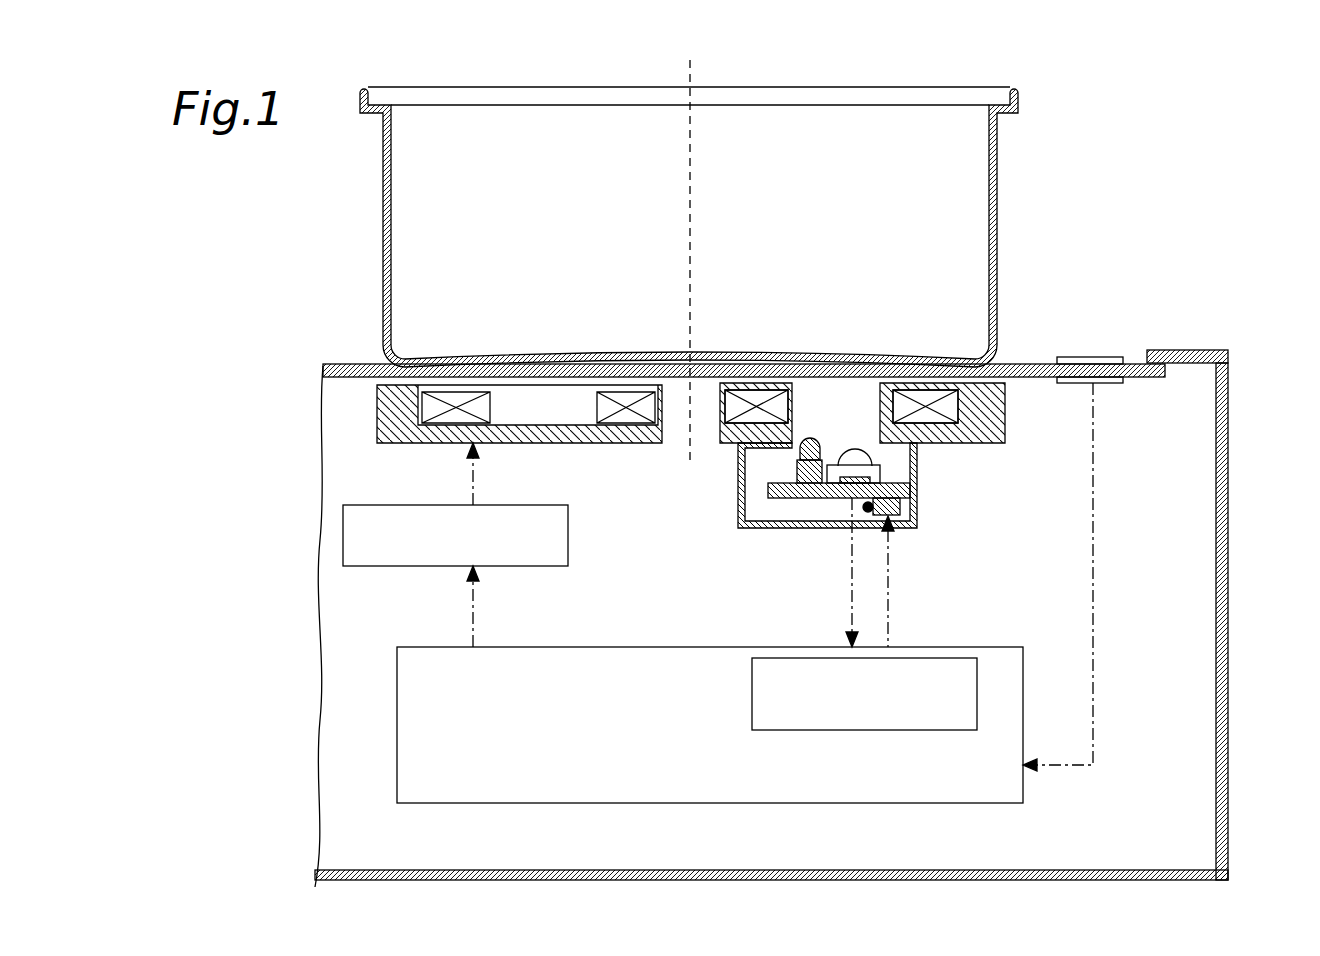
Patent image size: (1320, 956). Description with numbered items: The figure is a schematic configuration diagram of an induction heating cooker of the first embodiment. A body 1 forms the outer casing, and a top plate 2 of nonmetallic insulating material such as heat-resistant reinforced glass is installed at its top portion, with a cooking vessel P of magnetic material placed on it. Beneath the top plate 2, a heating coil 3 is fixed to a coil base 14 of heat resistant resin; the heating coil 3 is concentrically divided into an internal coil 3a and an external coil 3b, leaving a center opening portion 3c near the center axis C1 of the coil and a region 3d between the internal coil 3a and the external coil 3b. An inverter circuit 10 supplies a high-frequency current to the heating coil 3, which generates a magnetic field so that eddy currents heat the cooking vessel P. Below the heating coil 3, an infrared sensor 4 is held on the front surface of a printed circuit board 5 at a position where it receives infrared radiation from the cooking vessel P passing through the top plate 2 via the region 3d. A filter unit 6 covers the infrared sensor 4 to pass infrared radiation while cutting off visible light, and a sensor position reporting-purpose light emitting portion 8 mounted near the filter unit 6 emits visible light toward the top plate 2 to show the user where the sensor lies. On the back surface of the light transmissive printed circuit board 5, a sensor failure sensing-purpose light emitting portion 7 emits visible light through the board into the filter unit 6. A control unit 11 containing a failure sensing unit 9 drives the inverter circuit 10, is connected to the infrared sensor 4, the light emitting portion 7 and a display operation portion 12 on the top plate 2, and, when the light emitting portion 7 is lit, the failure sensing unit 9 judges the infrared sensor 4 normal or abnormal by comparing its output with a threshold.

The body 1 is at (1228, 480).
The top plate 2 is at (1005, 358).
The heating coil 3 is at (653, 340).
The internal coil 3a is at (622, 393).
The external coil 3b is at (458, 393).
The center opening portion 3c is at (708, 395).
The region between the internal coil and the external coil 3d is at (852, 398).
The infrared sensor 4 is at (867, 470).
The printed circuit board 5 is at (913, 493).
The filter unit 6 is at (857, 458).
The sensor failure sensing-purpose light emitting portion 7 is at (897, 512).
The sensor position reporting-purpose light emitting portion 8 is at (808, 438).
The failure sensing unit 9 is at (953, 658).
The inverter circuit 10 is at (378, 566).
The control unit 11 is at (597, 803).
The display operation portion 12 is at (1103, 357).
The coil base 14 is at (388, 412).
The cooking vessel P is at (997, 167).
The center axis C1 is at (695, 165).